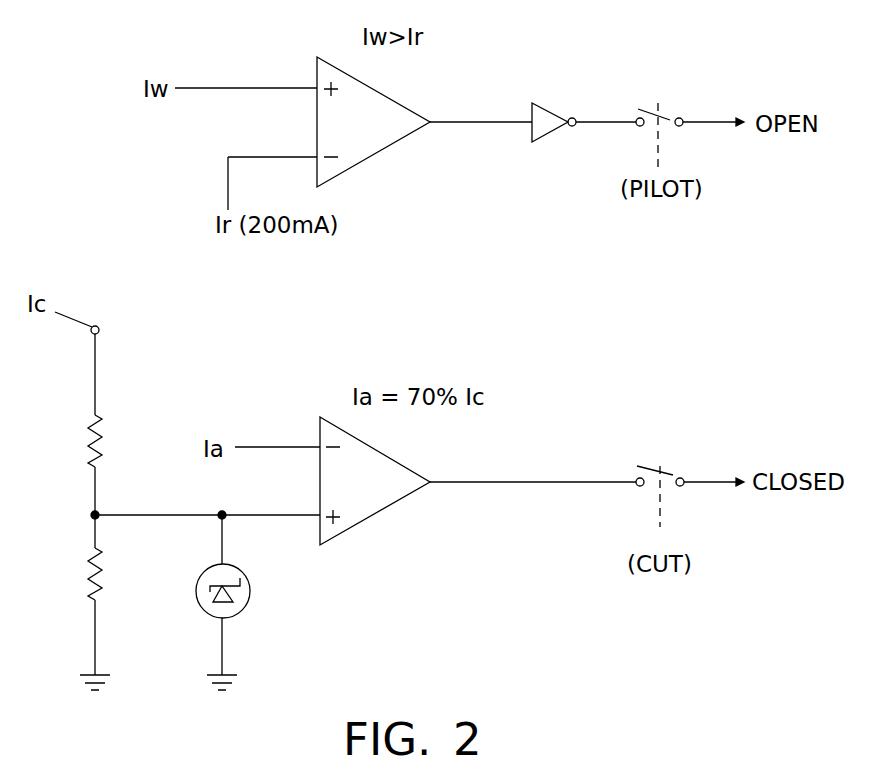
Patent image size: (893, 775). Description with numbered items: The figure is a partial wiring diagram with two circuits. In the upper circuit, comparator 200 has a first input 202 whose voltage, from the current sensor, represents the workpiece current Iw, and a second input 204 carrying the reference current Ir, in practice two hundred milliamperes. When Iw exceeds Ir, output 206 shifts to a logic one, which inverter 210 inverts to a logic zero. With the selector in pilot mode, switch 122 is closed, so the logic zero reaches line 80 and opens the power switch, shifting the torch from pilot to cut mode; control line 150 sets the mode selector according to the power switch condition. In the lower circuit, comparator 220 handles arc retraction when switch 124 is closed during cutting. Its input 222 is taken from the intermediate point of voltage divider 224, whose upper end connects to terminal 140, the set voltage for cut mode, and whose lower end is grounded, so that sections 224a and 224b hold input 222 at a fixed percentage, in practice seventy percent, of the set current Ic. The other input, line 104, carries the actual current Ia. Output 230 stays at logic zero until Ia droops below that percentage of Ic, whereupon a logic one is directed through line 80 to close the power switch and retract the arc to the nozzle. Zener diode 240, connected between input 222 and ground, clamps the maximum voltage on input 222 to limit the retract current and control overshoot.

The comparator 200 is at (388, 150).
The input 202 is at (225, 85).
The input 204 is at (262, 155).
The output 206 is at (482, 127).
The inverter 210 is at (547, 137).
The switch 122 is at (650, 117).
The control line 150 is at (658, 145).
The line 80 is at (699, 120).
The terminal 140 is at (98, 327).
The voltage divider 224 is at (95, 382).
The section 224a is at (93, 450).
The section 224b is at (90, 572).
The input 222 is at (280, 517).
The zener diode 240 is at (245, 607).
The line 104 is at (270, 443).
The comparator 220 is at (390, 507).
The output 230 is at (498, 485).
The switch 124 is at (650, 468).